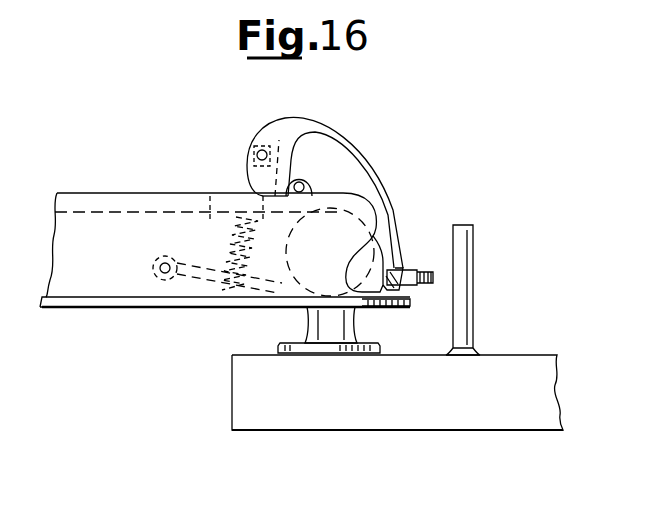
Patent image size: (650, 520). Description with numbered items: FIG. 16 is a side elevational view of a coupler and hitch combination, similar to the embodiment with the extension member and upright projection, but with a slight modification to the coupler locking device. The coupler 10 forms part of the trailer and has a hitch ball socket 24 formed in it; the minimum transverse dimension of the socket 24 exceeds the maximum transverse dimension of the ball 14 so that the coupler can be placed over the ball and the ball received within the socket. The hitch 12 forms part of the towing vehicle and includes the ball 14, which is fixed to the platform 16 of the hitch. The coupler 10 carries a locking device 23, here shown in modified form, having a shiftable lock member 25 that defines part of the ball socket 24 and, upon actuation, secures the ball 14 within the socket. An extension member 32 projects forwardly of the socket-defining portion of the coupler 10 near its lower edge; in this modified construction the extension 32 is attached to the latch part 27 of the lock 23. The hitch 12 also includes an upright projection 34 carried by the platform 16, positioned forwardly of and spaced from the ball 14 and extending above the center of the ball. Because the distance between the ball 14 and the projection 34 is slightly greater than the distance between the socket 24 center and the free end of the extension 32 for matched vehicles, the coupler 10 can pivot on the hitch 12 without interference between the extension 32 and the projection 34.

The coupler 10 is at (80, 191).
The hitch 12 is at (423, 414).
The ball 14 is at (344, 213).
The platform 16 is at (251, 412).
The locking device 23 is at (276, 136).
The hitch ball socket 24 is at (381, 311).
The shiftable lock member 25 is at (284, 301).
The latch part 27 is at (363, 267).
The extension member 32 is at (419, 270).
The upright projection 34 is at (470, 260).